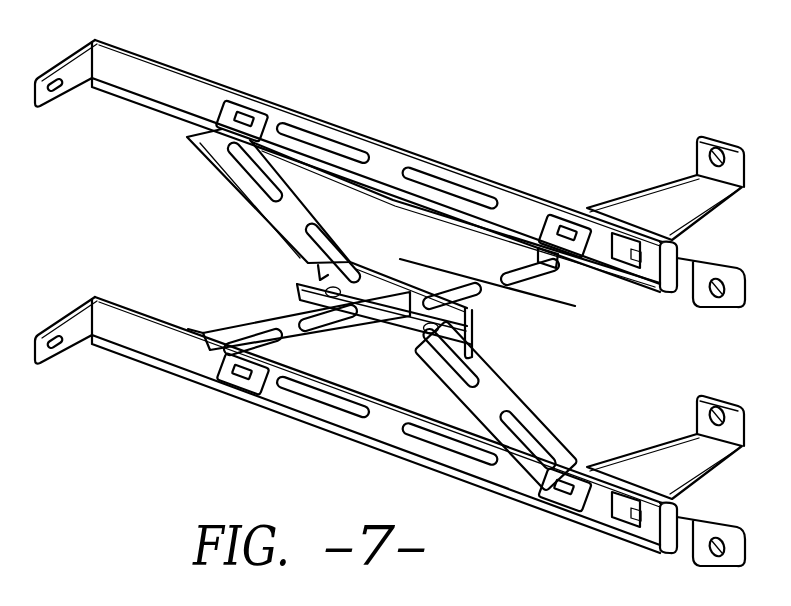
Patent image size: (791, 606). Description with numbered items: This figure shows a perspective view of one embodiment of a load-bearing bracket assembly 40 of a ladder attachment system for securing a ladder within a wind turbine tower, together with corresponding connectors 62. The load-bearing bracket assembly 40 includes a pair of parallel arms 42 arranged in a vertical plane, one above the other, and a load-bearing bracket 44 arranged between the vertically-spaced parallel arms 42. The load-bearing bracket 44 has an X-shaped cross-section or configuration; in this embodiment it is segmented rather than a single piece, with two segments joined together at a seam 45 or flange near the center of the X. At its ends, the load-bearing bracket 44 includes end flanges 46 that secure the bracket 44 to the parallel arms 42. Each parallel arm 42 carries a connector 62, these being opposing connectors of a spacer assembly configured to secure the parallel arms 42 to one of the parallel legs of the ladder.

The load-bearing bracket assembly 40 is at (562, 97).
The parallel arms 42 is at (166, 65).
The load-bearing bracket 44 is at (468, 343).
The seam 45 is at (319, 285).
The end flanges 46 is at (250, 99).
The connectors 62 is at (670, 193).